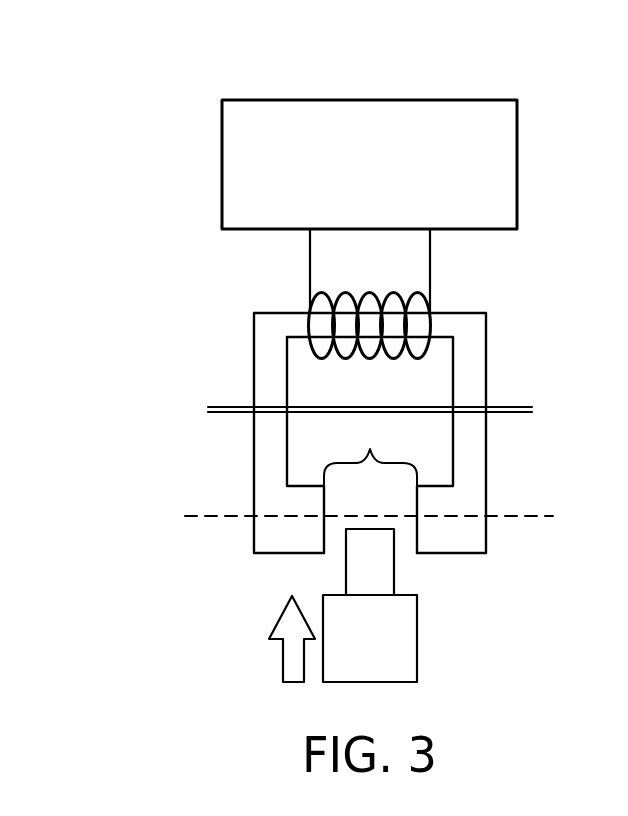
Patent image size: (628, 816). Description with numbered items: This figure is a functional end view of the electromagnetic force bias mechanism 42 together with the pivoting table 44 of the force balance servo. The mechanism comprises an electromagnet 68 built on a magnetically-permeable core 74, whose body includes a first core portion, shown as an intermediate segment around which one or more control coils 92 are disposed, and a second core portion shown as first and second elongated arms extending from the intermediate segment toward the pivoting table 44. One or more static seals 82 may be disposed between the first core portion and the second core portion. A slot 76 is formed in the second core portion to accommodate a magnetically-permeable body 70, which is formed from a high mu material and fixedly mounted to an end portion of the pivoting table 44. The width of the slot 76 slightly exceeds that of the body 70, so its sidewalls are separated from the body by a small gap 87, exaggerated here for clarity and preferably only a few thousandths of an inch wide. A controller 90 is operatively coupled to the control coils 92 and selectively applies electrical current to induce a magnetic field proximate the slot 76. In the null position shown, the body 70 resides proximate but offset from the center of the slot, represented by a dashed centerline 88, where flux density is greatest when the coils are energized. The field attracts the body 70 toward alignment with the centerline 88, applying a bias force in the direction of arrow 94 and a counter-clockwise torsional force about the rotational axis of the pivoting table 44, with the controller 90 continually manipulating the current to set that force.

The electromagnetic force bias mechanism 42 is at (118, 64).
The controller 90 is at (392, 195).
The magnetically-permeable core 74 is at (271, 322).
The electromagnet 68 is at (436, 416).
The control coils 92 is at (390, 358).
The static seals 82 is at (521, 405).
The slot 76 is at (370, 451).
The dashed centerline 88 is at (545, 514).
The magnetically-permeable body 70 is at (391, 577).
The pivoting table 44 is at (391, 657).
The gap 87 is at (404, 549).
The arrow 94 is at (283, 658).